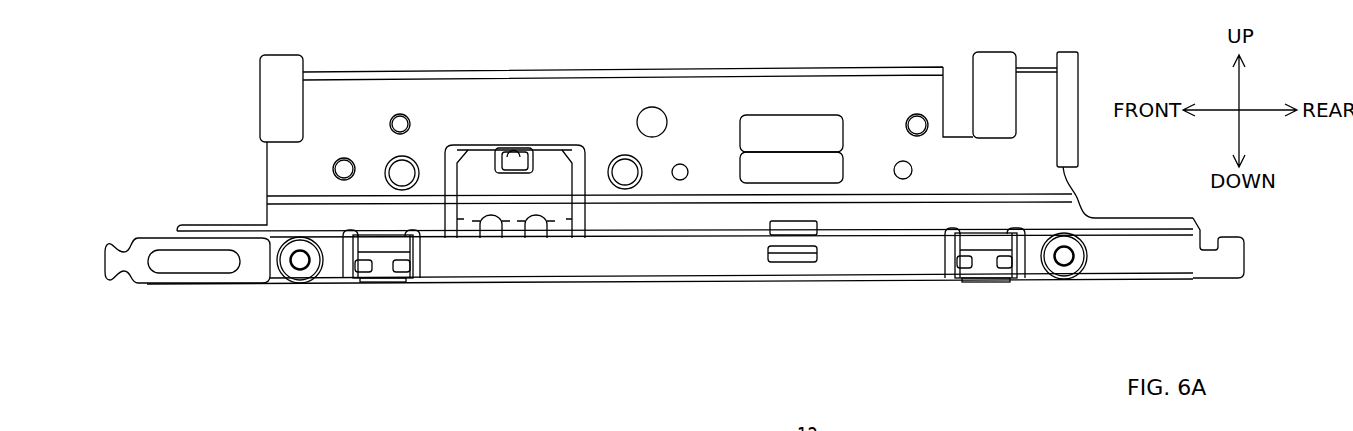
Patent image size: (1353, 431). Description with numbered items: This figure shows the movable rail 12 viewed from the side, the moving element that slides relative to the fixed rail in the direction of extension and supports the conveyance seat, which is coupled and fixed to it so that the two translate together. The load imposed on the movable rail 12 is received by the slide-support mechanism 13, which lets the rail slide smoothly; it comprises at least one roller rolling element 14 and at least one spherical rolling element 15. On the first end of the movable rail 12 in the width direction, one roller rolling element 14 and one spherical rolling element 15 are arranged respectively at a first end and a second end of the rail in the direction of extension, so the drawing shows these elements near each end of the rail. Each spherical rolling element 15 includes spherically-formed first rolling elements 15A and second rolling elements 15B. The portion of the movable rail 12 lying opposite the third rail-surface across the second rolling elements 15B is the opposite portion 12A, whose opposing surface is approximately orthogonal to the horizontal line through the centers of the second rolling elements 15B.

The movable rail 12 is at (728, 68).
The opposite portion 12A is at (632, 262).
The slide-support mechanism 13 is at (682, 328).
The roller rolling element 14 is at (290, 285).
The spherical rolling element 15 is at (685, 309).
The first rolling elements 15A is at (347, 255).
The second rolling elements 15B is at (358, 272).